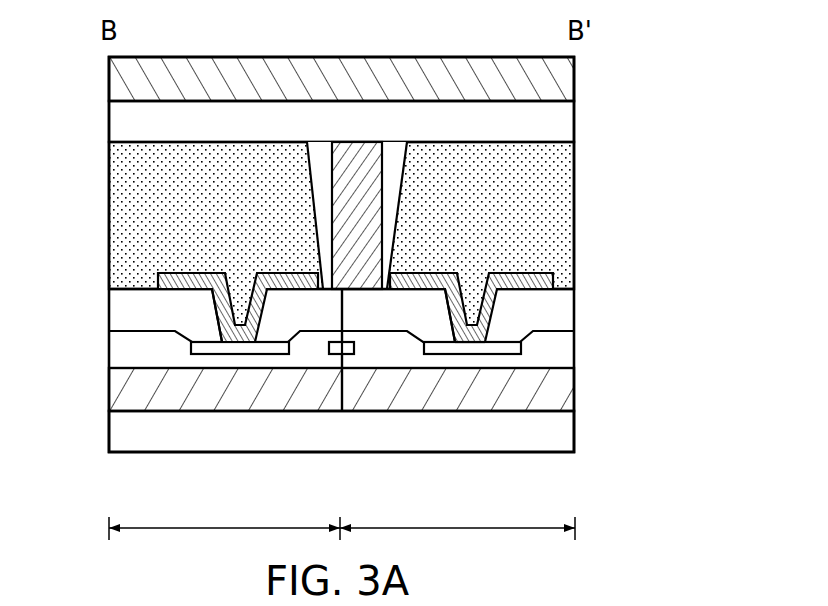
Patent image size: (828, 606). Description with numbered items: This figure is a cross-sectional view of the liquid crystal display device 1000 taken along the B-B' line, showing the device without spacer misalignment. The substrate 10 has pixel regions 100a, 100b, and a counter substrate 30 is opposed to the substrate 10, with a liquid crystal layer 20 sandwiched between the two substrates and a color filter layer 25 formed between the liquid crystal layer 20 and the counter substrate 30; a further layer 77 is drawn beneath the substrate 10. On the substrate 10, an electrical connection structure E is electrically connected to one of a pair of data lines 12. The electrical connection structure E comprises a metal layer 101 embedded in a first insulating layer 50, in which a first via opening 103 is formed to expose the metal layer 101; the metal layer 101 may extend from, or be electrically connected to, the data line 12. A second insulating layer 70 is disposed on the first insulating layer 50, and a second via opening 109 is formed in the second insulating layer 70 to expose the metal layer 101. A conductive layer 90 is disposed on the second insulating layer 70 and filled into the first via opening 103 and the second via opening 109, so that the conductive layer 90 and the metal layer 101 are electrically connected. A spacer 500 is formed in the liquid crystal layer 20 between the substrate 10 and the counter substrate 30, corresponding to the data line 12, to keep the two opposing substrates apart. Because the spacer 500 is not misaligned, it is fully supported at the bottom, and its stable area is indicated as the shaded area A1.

The liquid crystal display device 1000 is at (616, 53).
The counter substrate 30 is at (565, 82).
The color filter layer 25 is at (565, 121).
The liquid crystal layer 20 is at (565, 158).
The spacer 500 is at (400, 158).
The stable area A1 is at (370, 200).
The electrical connection structure E is at (473, 280).
The second insulating layer 70 is at (112, 300).
The first insulating layer 50 is at (117, 347).
The conductive layer 90 is at (210, 273).
The metal layer 101 is at (235, 348).
The first via opening 103 is at (250, 343).
The second via opening 109 is at (215, 316).
The data line 12 is at (348, 352).
The substrate 10 is at (565, 392).
The bottom layer 77 is at (565, 432).
The pixel region 100b is at (224, 539).
The pixel region 100a is at (457, 539).